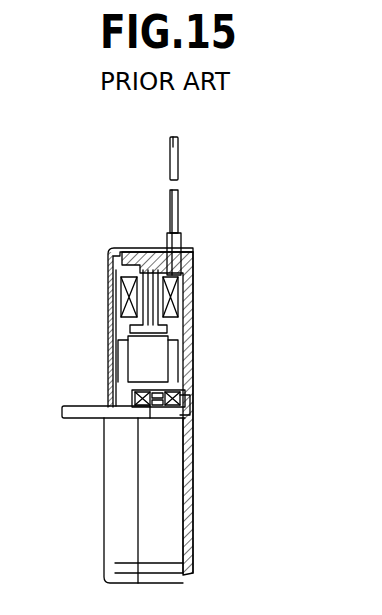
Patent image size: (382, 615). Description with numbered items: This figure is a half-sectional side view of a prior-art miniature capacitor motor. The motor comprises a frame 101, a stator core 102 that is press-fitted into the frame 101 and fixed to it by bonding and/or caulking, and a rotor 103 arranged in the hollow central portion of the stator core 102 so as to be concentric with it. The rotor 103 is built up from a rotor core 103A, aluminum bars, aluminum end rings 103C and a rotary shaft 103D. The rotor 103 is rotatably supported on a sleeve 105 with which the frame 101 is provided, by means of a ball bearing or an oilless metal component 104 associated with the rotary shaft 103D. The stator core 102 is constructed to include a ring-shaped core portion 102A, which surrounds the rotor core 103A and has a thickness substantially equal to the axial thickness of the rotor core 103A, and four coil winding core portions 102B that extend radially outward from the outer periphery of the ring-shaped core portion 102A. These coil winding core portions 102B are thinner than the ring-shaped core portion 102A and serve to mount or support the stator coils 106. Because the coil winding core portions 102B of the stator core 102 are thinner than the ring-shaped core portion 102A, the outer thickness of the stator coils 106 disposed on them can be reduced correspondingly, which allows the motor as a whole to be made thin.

The frame 101 is at (194, 267).
The stator core 102 is at (160, 312).
The ring-shaped core portion 102A is at (134, 328).
The coil winding core portions 102B is at (170, 292).
The rotor 103 is at (176, 370).
The rotor core 103A is at (130, 356).
The aluminum end rings 103C is at (118, 370).
The rotary shaft 103D is at (88, 416).
The ball bearing or oilless metal component 104 is at (195, 405).
The sleeve 105 is at (152, 418).
The stator coils 106 is at (124, 292).